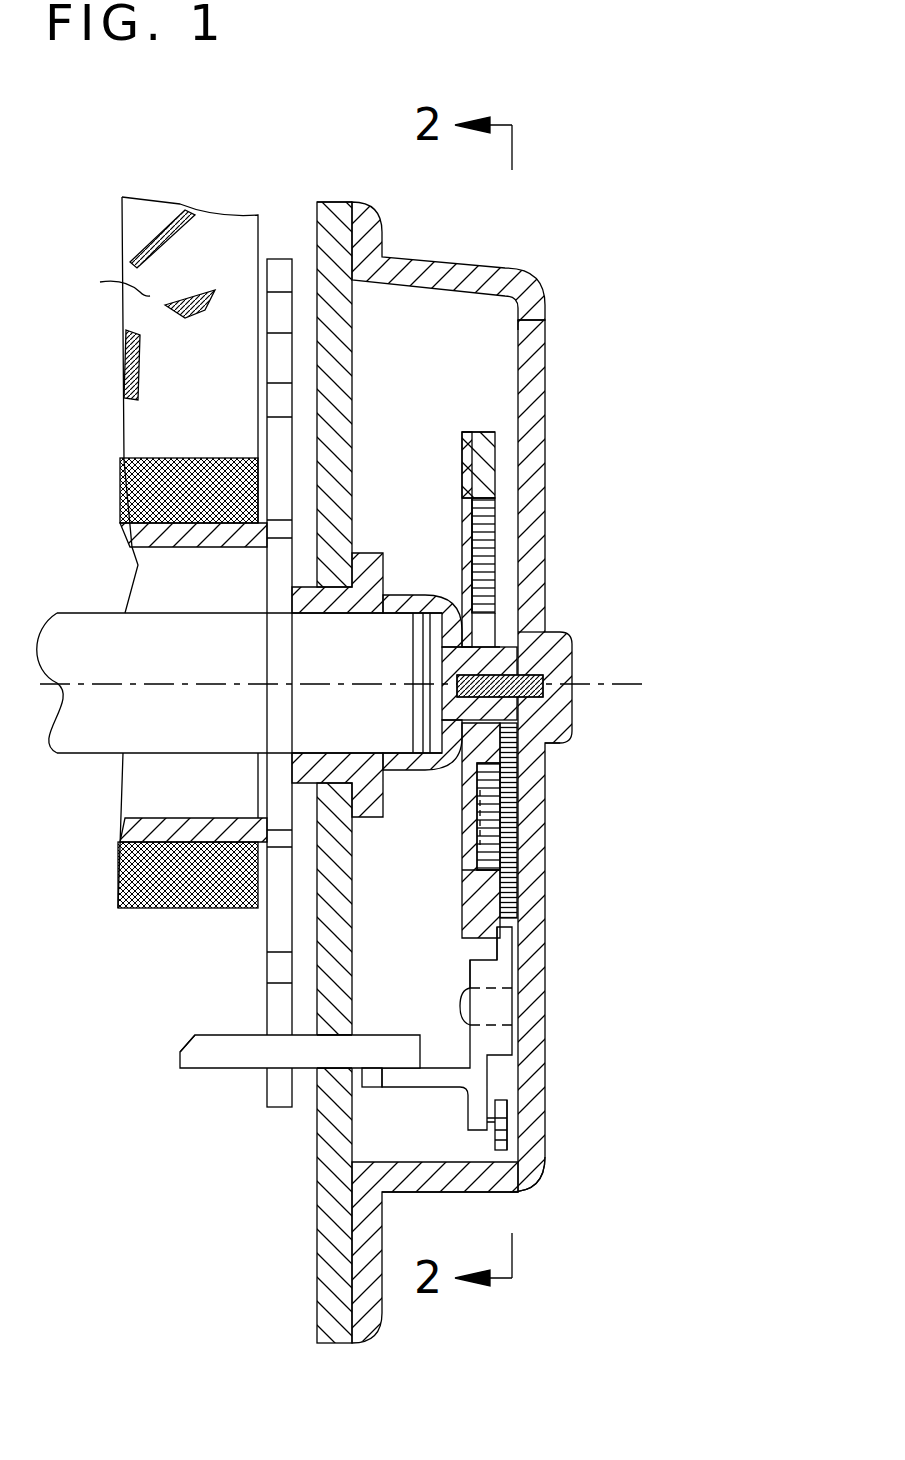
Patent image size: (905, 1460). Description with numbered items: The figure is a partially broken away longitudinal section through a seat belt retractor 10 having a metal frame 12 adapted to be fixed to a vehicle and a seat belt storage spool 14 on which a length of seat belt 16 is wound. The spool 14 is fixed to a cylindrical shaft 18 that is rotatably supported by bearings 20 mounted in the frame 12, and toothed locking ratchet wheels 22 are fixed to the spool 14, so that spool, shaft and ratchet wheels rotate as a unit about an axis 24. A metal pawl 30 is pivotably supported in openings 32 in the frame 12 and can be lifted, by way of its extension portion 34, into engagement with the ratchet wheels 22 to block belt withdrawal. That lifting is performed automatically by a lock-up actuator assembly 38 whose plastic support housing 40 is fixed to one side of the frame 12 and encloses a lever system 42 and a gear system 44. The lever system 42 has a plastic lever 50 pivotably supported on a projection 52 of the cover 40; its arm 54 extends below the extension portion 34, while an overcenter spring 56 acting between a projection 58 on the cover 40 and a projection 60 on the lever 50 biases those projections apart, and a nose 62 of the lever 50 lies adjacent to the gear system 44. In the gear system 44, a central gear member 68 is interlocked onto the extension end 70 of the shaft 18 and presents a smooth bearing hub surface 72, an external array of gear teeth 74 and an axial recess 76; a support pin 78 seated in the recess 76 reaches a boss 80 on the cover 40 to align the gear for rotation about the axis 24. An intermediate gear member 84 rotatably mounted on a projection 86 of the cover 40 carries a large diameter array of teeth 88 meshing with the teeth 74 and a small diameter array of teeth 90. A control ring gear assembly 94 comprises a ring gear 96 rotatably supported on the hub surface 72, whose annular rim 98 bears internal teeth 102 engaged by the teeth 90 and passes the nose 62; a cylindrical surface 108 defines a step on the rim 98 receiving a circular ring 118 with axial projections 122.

The seat belt retractor 10 is at (392, 70).
The metal frame 12 is at (325, 1280).
The seat belt storage spool 14 is at (137, 836).
The seat belt 16 is at (150, 297).
The cylindrical shaft 18 is at (92, 742).
The bearings 20 is at (363, 558).
The toothed locking ratchet wheels 22 is at (272, 947).
The axis 24 is at (598, 682).
The pawl 30 is at (225, 1082).
The openings 32 is at (330, 1083).
The extension portion 34 is at (375, 1052).
The lock-up actuator assembly 38 is at (505, 222).
The support housing 40 is at (530, 297).
The lever system 42 is at (430, 958).
The gear system 44 is at (418, 415).
The lever 50 is at (475, 1045).
The projection 52 is at (465, 990).
The arm 54 is at (405, 1083).
The overcenter spring 56 is at (498, 1128).
The projection 58 is at (512, 1140).
The projection 60 is at (487, 1120).
The nose 62 is at (528, 945).
The central gear member 68 is at (448, 595).
The extension end 70 is at (388, 745).
The bearing hub surface 72 is at (452, 638).
The gear teeth 74 is at (520, 630).
The axial recess 76 is at (452, 706).
The support pin 78 is at (548, 690).
The boss 80 is at (553, 735).
The intermediate gear member 84 is at (520, 893).
The projection 86 is at (465, 832).
The large diameter array of external gear teeth 88 is at (508, 915).
The small diameter array of external gear teeth 90 is at (490, 850).
The control ring gear assembly 94 is at (450, 500).
The ring gear 96 is at (462, 535).
The annular rim 98 is at (495, 435).
The internal teeth 102 is at (495, 555).
The cylindrical surface 108 is at (462, 457).
The circular ring 118 is at (468, 435).
The projections 122 is at (488, 932).